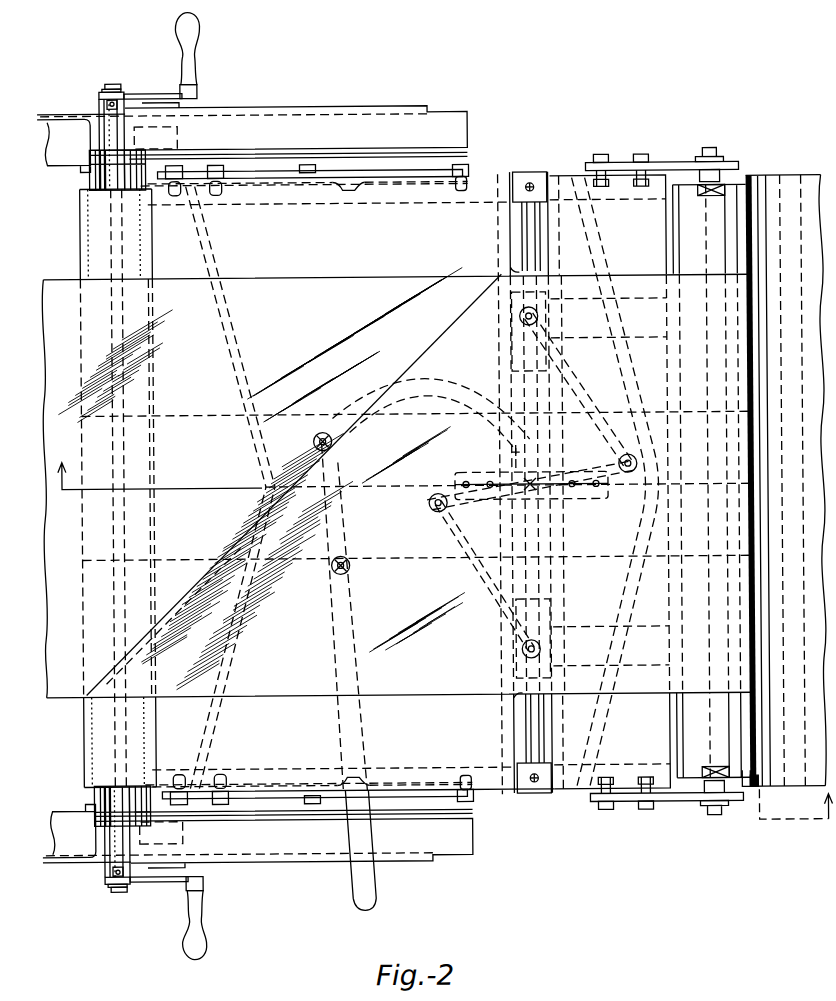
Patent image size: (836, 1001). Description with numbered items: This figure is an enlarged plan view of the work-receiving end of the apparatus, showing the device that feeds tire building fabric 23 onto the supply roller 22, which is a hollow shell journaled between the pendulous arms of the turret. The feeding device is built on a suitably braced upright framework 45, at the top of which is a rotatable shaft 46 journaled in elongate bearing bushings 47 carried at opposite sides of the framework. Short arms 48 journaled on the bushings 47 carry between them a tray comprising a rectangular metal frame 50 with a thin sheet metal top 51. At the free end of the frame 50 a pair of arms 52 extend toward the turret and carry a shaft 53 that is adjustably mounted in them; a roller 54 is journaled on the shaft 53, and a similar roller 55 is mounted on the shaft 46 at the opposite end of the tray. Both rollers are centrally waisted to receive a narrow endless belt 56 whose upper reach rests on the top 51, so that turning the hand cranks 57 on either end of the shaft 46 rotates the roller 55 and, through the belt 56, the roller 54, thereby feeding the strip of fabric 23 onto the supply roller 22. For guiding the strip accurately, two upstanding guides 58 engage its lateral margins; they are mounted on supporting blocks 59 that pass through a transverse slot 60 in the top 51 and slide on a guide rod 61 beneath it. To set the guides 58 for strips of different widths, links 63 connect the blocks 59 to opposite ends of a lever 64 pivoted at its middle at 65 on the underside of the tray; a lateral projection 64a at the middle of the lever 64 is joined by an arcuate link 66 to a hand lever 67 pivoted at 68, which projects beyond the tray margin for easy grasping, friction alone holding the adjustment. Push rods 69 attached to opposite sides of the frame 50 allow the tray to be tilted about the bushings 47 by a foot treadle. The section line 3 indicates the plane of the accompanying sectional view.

The section line 3— 3 is at (444, 655).
The supply roller 22 is at (780, 182).
The tire building fabric 23 is at (290, 697).
The upright framework 45 is at (320, 119).
The rotatable shaft 46 is at (117, 891).
The bearing bushings 47 is at (114, 128).
The short arms 48 is at (194, 172).
The rectangular metal frame 50 is at (502, 793).
The sheet metal top 51 is at (480, 207).
The arms 52 is at (673, 167).
The shaft 53 is at (719, 812).
The roller 54 is at (739, 756).
The roller 55 is at (90, 212).
The endless belt 56 is at (193, 413).
The hand cranks 57 is at (155, 91).
The guides 58 is at (624, 268).
The supporting blocks 59 is at (513, 366).
The slot 60 is at (512, 231).
The guide rod 61 is at (530, 723).
The links 63 is at (581, 387).
The lever 64 is at (451, 487).
The lateral projection 64a is at (512, 452).
The pivot 65 is at (557, 500).
The arcuate link 66 is at (319, 434).
The hand lever 67 is at (347, 521).
The pivot 68 is at (349, 571).
The push rods 69 is at (381, 170).